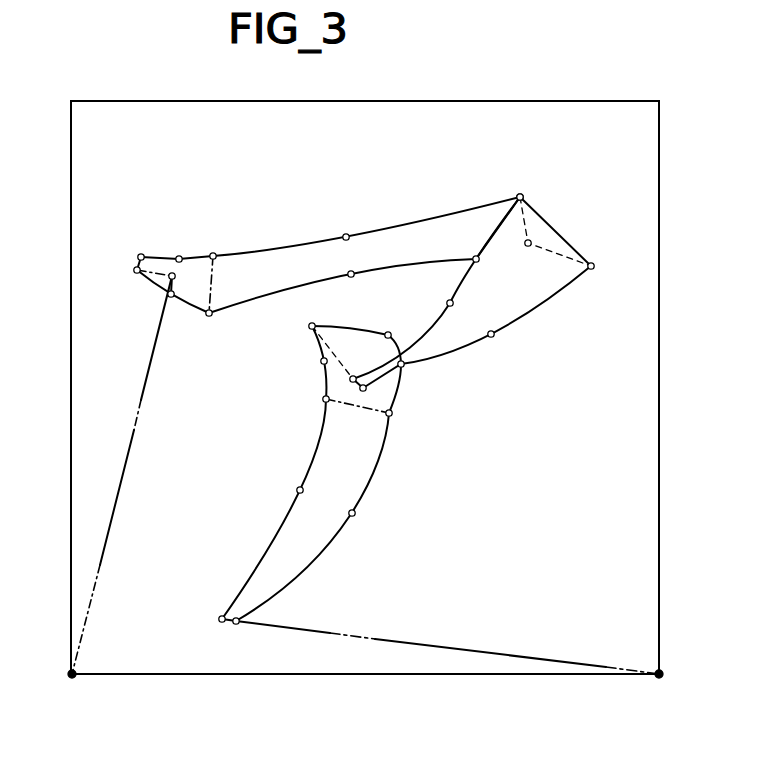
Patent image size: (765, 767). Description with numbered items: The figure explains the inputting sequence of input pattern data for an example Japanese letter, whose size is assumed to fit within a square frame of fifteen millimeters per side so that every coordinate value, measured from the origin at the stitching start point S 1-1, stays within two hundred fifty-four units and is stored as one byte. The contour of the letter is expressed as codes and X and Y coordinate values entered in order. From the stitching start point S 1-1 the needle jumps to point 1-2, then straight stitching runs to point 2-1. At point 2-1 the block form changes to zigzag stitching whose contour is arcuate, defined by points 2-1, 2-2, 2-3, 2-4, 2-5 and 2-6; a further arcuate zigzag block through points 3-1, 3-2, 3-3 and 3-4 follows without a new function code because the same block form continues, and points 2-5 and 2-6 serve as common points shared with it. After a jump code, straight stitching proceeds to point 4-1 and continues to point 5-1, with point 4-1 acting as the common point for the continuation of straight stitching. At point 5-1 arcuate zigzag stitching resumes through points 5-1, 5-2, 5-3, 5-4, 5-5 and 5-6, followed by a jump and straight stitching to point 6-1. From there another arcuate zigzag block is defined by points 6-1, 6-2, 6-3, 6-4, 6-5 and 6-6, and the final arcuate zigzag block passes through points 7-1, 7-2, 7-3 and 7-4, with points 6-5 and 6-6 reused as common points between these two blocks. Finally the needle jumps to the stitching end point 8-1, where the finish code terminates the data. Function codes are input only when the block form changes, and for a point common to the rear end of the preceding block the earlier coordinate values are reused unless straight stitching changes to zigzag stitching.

The stitching start point S 1-1 is at (72, 677).
The jump point 1-2 is at (170, 279).
The straight stitching end point 2-1 is at (134, 270).
The arcuate ZZ stitching point 2-2 is at (141, 254).
The arcuate ZZ stitching point 2-3 is at (171, 297).
The arcuate ZZ stitching point 2-4 is at (179, 256).
The common point of ZZ stitching 2-5 is at (209, 316).
The common point of ZZ stitching 2-6 is at (213, 253).
The arcuate ZZ stitching point 3-1 is at (351, 277).
The arcuate ZZ stitching point 3-2 is at (346, 234).
The arcuate ZZ stitching point 3-3 is at (473, 262).
The arcuate ZZ stitching point 3-4 is at (520, 194).
The common point of straight stitching 4-1 is at (528, 246).
The straight stitching end point 5-1 is at (592, 268).
The arcuate ZZ stitching point 5-2 is at (520, 197).
The arcuate ZZ stitching point 5-3 is at (492, 336).
The arcuate ZZ stitching point 5-4 is at (453, 304).
The arcuate ZZ stitching point 5-5 is at (365, 390).
The arcuate ZZ stitching point 5-6 is at (350, 380).
The straight stitching end point 6-1 is at (310, 326).
The arcuate ZZ stitching point 6-2 is at (388, 332).
The arcuate ZZ stitching point 6-3 is at (322, 361).
The arcuate ZZ stitching point 6-4 is at (403, 366).
The common point of ZZ stitching 6-5 is at (324, 400).
The common point of ZZ stitching 6-6 is at (390, 416).
The arcuate ZZ stitching point 7-1 is at (297, 490).
The arcuate ZZ stitching point 7-2 is at (355, 514).
The arcuate ZZ stitching point 7-3 is at (219, 619).
The arcuate ZZ stitching point 7-4 is at (237, 624).
The stitching end point 8-1 is at (659, 677).